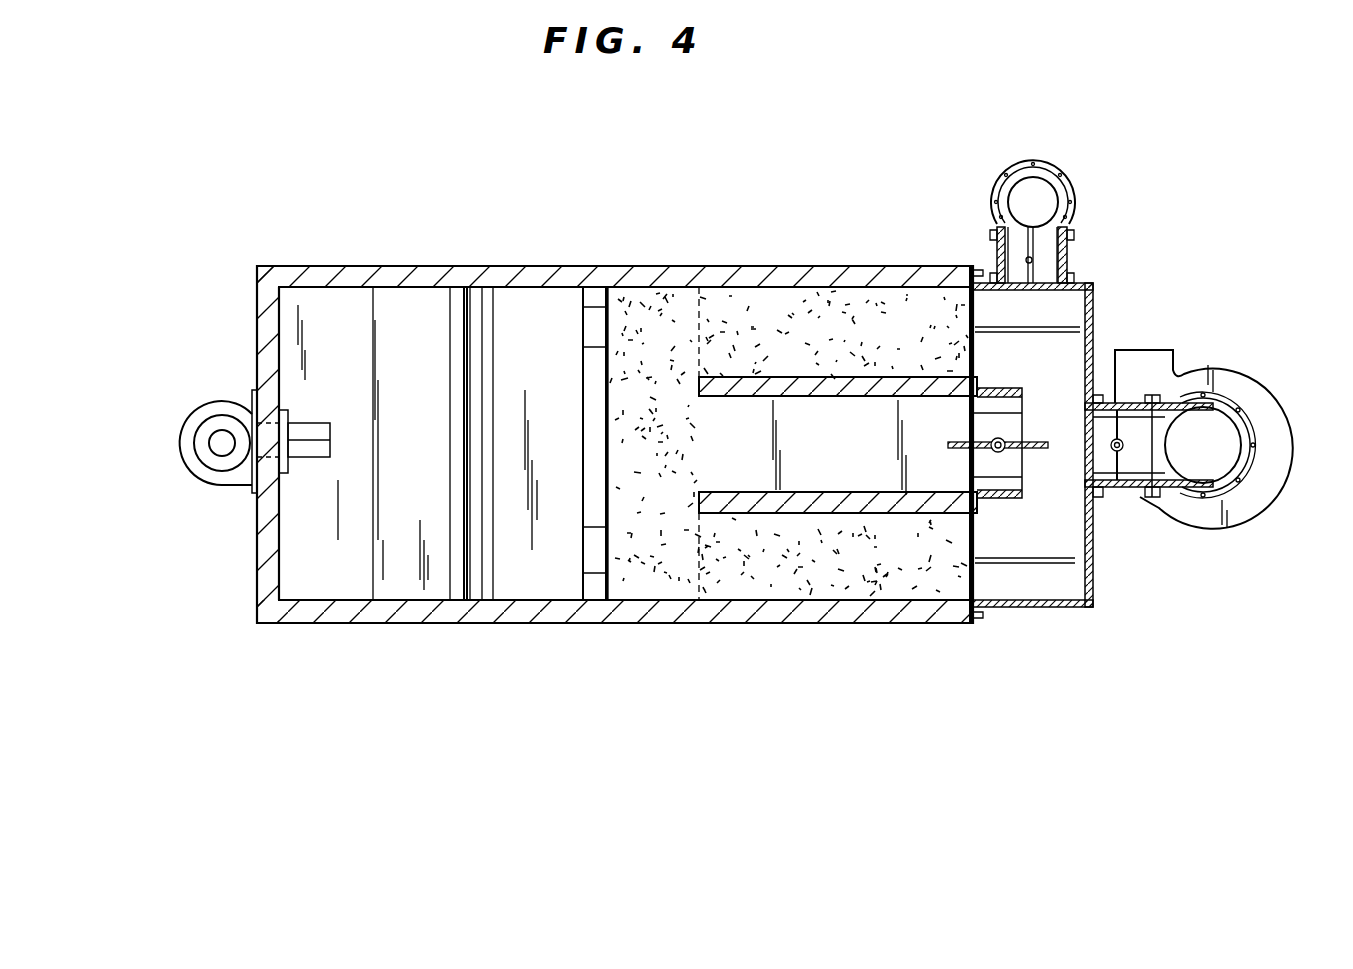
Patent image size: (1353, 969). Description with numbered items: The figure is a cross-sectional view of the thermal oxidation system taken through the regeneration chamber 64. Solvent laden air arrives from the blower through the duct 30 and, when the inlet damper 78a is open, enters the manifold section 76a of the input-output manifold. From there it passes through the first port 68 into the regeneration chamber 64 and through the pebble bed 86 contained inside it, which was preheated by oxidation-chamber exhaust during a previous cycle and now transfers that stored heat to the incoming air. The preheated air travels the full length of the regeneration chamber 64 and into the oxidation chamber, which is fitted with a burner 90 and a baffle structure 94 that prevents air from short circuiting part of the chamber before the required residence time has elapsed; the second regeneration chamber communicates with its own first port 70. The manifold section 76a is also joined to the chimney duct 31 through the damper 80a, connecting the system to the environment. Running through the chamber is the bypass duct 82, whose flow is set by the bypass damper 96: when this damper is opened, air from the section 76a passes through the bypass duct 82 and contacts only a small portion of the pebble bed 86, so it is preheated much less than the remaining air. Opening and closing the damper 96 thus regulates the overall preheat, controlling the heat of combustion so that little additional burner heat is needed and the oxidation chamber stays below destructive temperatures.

The duct 30 is at (1038, 195).
The duct 31 is at (1223, 442).
The regeneration chamber 64 is at (782, 570).
The first port 68 is at (412, 303).
The first port 70 is at (623, 515).
The manifold section 76a is at (1065, 537).
The damper 78a is at (1042, 255).
The damper 80a is at (1137, 467).
The bypass duct 82 is at (875, 518).
The pebble bed 86 is at (845, 335).
The burner 90 is at (307, 427).
The baffle structure 94 is at (542, 312).
The damper 96 is at (1002, 425).